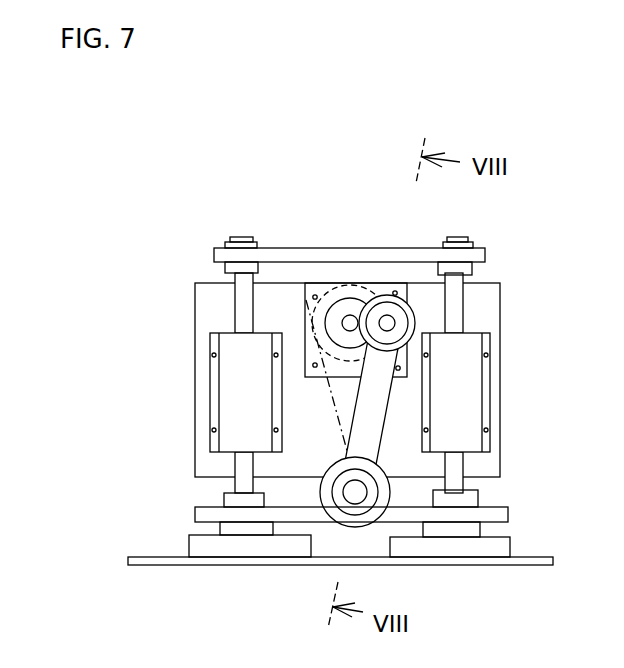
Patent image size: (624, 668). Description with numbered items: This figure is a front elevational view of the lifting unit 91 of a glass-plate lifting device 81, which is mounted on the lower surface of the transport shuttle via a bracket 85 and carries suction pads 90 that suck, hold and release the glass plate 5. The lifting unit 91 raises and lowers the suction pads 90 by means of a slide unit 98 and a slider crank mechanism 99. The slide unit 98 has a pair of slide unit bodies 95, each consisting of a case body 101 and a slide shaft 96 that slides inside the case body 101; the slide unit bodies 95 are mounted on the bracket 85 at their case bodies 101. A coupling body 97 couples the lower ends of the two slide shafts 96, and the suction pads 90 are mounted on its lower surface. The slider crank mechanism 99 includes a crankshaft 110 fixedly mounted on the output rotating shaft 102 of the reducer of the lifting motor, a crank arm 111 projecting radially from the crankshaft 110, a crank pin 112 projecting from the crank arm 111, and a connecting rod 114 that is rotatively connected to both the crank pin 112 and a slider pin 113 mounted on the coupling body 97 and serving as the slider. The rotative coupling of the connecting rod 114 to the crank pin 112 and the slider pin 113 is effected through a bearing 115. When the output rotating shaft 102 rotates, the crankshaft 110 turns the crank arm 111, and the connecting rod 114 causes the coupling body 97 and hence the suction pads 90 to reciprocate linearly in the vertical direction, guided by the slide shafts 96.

The glass plate 5 is at (160, 560).
The glass-plate lifting device 81 is at (198, 264).
The bracket 85 is at (212, 305).
The suction pads 90 is at (213, 543).
The lifting unit 91 is at (498, 265).
The slide unit body 95 is at (236, 422).
The slide shaft 96 is at (243, 486).
The coupling body 97 is at (493, 516).
The slide unit 98 is at (238, 351).
The slider crank mechanism 99 is at (378, 443).
The case body 101 is at (462, 397).
The output rotating shaft 102 is at (345, 320).
The crankshaft 110 is at (350, 322).
The crank arm 111 is at (363, 301).
The crank pin 112 is at (388, 323).
The slider pin 113 is at (355, 492).
The connecting rod 114 is at (372, 417).
The bearing 115 is at (405, 325).